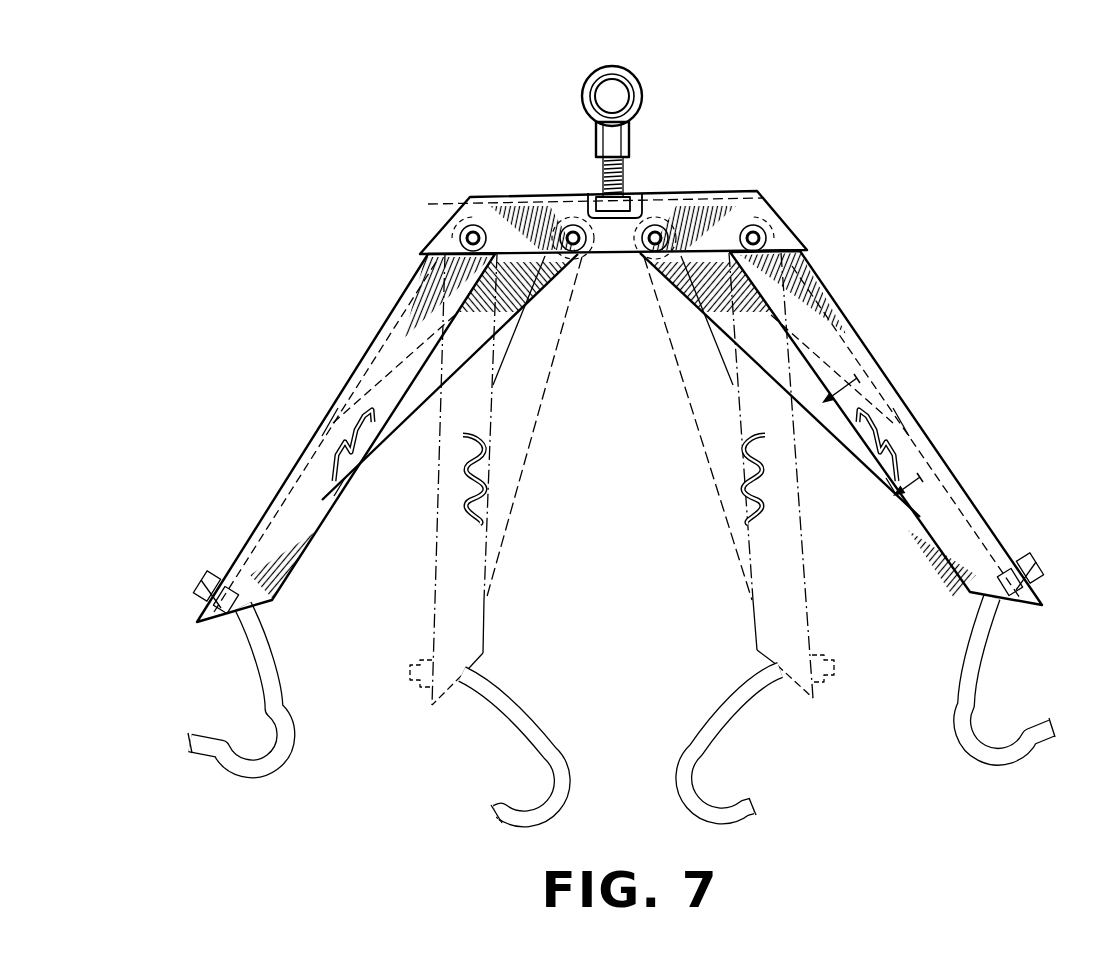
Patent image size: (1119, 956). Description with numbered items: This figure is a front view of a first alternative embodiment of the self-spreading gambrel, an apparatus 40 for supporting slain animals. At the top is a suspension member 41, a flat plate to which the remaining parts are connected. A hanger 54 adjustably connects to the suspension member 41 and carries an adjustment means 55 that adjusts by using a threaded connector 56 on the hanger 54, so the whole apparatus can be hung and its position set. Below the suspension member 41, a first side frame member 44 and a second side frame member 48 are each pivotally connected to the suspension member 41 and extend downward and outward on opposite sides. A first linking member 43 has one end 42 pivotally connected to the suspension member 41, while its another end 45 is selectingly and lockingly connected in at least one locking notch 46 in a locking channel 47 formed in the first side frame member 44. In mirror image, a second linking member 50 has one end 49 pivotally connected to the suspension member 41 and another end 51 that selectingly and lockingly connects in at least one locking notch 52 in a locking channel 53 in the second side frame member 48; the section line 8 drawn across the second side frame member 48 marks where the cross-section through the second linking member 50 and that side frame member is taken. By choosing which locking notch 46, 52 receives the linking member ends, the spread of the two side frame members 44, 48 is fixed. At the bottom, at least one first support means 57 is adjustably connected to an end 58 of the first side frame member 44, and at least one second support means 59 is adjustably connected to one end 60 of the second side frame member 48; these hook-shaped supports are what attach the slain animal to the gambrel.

The section line 8- 8 is at (863, 450).
The apparatus for supporting slain animals 40 is at (770, 158).
The suspension member 41 is at (562, 195).
The one end of first linking member 42 is at (500, 195).
The first linking member 43 is at (410, 414).
The first side frame member 44 is at (241, 533).
The another end of first linking member 45 is at (312, 428).
The locking notch 46 is at (330, 463).
The locking channel 47 is at (336, 488).
The second side frame member 48 is at (836, 278).
The one end of second linking member 49 is at (668, 193).
The second linking member 50 is at (720, 334).
The another end of second linking member 51 is at (900, 412).
The locking notch 52 is at (915, 428).
The locking channel 53 is at (920, 452).
The hanger 54 is at (638, 159).
The adjustment means 55 is at (587, 130).
The threaded connector 56 is at (643, 130).
The first support means 57 is at (239, 790).
The end of first side frame member 58 is at (200, 620).
The second support means 59 is at (1010, 774).
The end of second side frame member 60 is at (1042, 602).